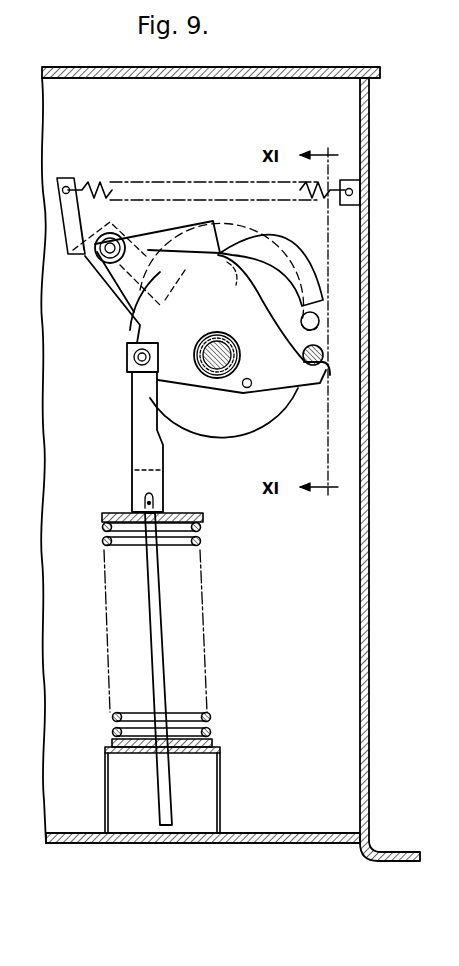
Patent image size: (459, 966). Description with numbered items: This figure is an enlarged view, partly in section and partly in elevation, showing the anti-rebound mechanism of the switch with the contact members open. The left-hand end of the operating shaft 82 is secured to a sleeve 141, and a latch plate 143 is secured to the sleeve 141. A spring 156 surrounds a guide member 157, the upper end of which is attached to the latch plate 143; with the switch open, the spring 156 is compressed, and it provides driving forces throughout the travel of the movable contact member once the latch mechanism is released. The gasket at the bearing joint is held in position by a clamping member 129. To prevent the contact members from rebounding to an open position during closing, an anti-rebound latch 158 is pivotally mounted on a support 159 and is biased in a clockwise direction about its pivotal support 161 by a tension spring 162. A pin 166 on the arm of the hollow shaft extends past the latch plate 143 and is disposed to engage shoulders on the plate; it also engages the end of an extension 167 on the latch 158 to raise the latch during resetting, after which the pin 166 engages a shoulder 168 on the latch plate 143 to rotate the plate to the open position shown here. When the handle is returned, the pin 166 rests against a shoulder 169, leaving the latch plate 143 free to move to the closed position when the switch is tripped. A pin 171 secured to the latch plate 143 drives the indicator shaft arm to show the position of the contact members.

The tension spring 162 is at (130, 182).
The anti-rebound latch 158 is at (177, 233).
The shoulder 168 is at (222, 240).
The pin 166 is at (240, 250).
The extension 167 is at (289, 262).
The pivotal support 161 is at (100, 260).
The support 159 is at (118, 285).
The latch plate 143 is at (124, 337).
The shoulder 169 is at (328, 368).
The sleeve 141 is at (205, 376).
The shaft 82 is at (217, 378).
The pin 171 is at (247, 388).
The clamping member 129 is at (227, 440).
The guide member 157 is at (163, 690).
The spring 156 is at (112, 716).